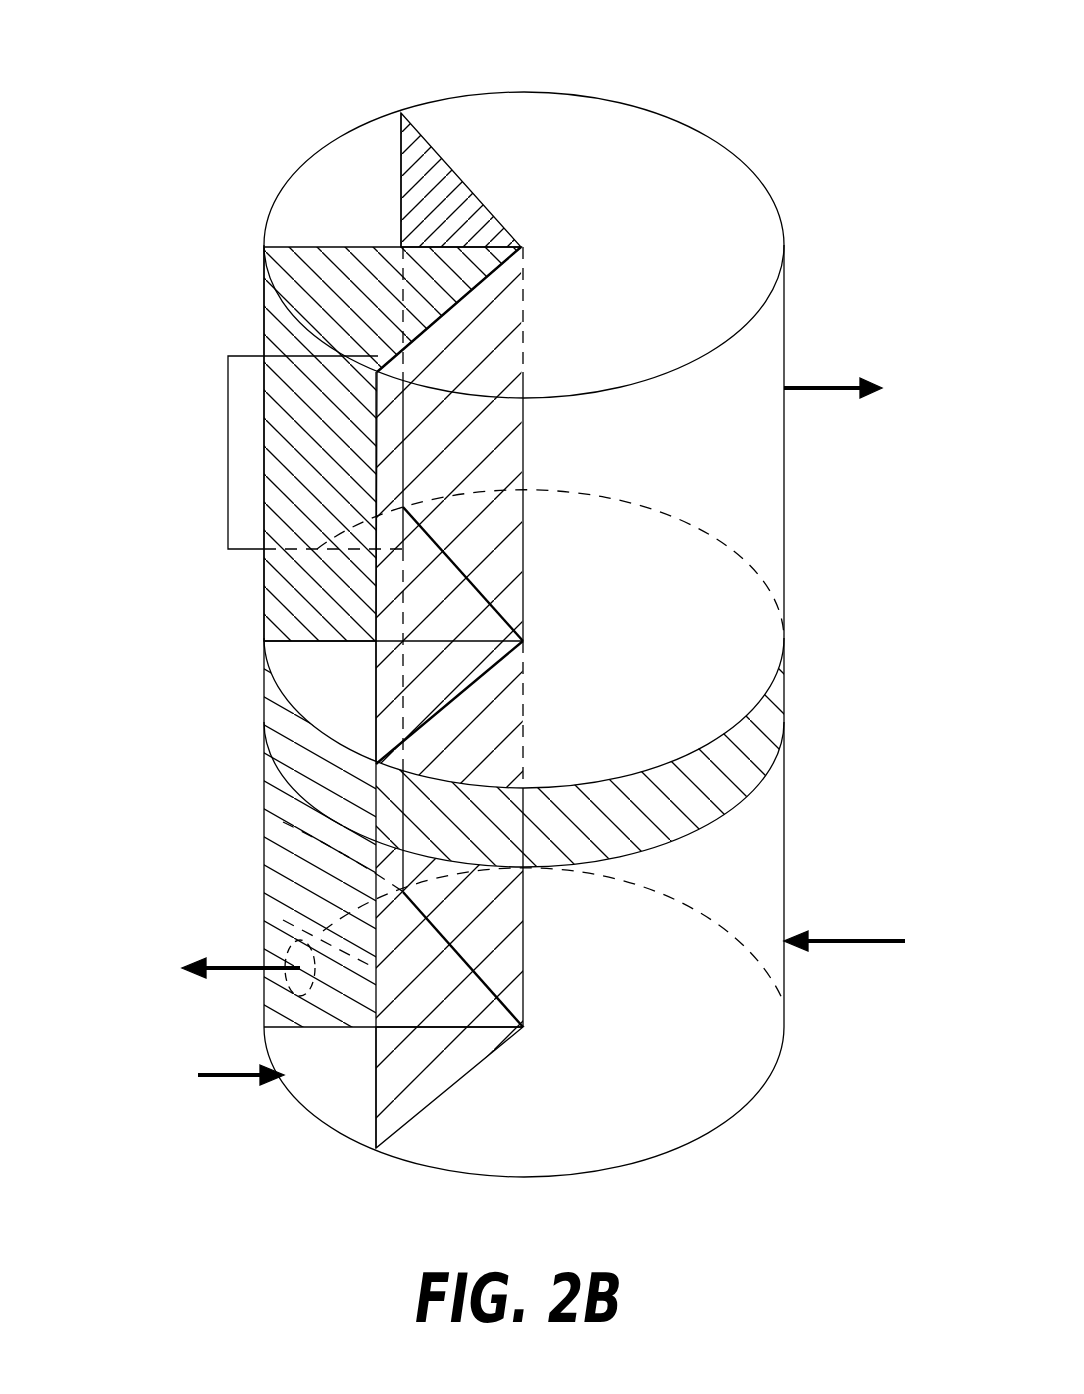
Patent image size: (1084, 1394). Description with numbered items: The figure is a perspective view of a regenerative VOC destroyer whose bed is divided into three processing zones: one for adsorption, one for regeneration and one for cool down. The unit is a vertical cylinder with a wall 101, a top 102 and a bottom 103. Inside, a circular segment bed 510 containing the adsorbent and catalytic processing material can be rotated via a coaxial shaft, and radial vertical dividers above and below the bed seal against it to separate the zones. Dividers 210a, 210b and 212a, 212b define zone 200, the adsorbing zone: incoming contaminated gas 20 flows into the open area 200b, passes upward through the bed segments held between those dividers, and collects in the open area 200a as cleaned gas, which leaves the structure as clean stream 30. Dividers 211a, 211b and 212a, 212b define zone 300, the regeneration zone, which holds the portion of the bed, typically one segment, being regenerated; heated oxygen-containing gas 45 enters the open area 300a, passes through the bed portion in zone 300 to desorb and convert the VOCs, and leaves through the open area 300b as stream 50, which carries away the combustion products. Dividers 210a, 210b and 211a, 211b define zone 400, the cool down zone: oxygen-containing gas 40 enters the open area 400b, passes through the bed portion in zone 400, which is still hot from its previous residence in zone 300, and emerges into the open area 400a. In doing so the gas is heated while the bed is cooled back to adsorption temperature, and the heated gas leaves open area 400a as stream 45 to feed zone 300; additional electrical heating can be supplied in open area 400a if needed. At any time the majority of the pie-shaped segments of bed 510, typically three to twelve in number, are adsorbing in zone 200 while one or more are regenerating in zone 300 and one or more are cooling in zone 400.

The wall 101 is at (786, 290).
The top 102 is at (690, 165).
The bottom 103 is at (690, 1081).
The zone 200 is at (665, 183).
The open area 200a is at (690, 460).
The open area 200b is at (760, 886).
The zone 300 is at (446, 178).
The open area 300a is at (317, 549).
The open area 300b is at (283, 920).
The zone 400 is at (440, 270).
The open area 400a is at (300, 677).
The open area 400b is at (307, 1082).
The circular segment bed 510 is at (625, 843).
The divider 210a is at (420, 357).
The divider 211a is at (322, 255).
The divider 212a is at (408, 163).
The divider 210b is at (393, 1070).
The divider 211b is at (283, 893).
The divider 212b is at (300, 826).
The heated oxygen-containing gas 45 is at (228, 443).
The clean stream 30 is at (822, 388).
The incoming contaminated gas 20 is at (823, 941).
The oxygen-containing gas stream 40 is at (200, 1075).
The stream 50 is at (235, 968).